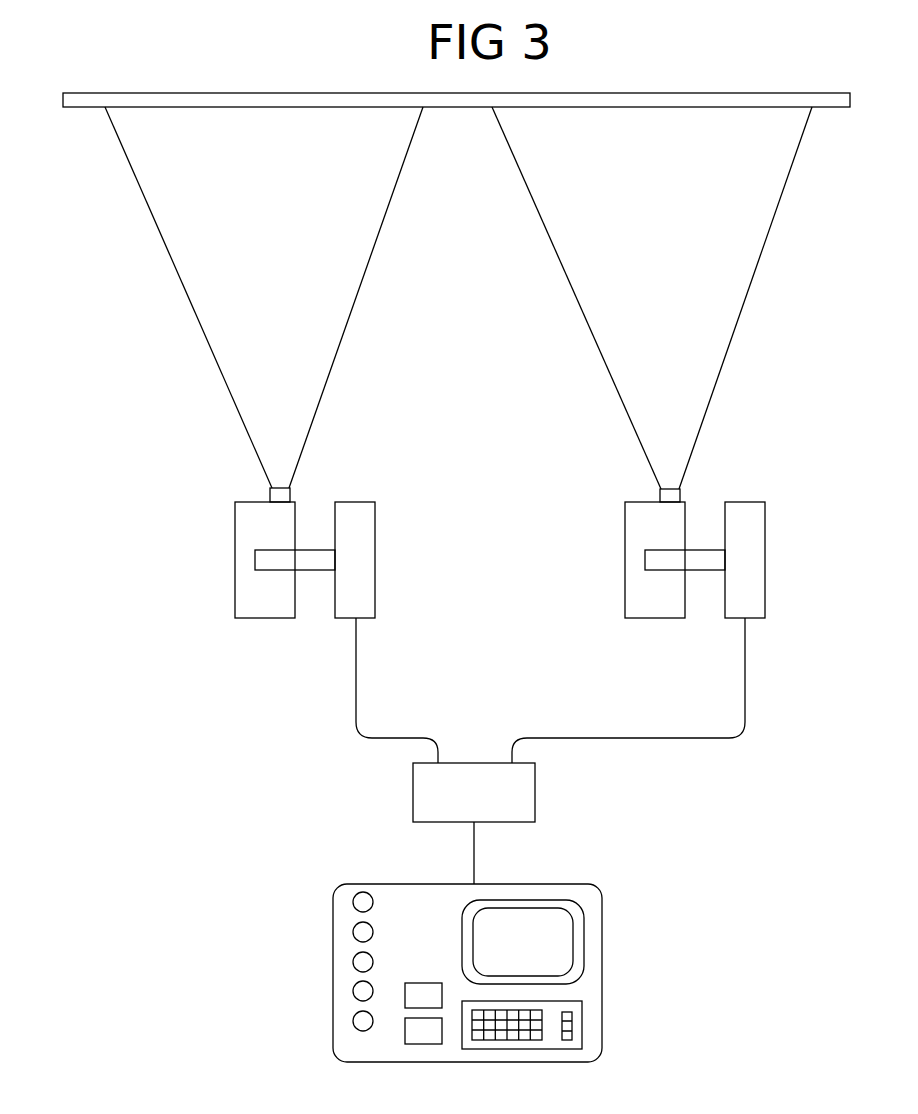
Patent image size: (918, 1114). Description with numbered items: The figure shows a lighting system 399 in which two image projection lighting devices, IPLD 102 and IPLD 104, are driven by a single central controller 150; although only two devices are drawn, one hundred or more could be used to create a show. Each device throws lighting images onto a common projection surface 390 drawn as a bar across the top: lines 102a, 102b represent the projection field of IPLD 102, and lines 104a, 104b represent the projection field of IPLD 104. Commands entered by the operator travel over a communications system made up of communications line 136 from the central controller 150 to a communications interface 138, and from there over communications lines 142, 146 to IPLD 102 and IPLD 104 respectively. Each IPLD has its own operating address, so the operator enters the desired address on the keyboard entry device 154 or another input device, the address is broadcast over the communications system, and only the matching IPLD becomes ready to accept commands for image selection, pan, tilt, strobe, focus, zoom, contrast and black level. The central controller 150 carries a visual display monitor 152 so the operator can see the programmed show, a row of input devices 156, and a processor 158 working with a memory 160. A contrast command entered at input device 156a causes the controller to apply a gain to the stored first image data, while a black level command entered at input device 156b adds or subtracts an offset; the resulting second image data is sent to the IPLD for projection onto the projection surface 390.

The lighting system 399 is at (86, 318).
The projection surface 390 is at (297, 117).
The IPLD 102 is at (225, 588).
The line 102a is at (208, 332).
The line 102b is at (357, 318).
The IPLD 104 is at (773, 593).
The line 104a is at (592, 312).
The line 104b is at (743, 305).
The communications line 142 is at (342, 682).
The communications line 146 is at (573, 740).
The communications interface 138 is at (413, 802).
The communications line 136 is at (480, 858).
The central controller 150 is at (333, 970).
The visual display monitor 152 is at (588, 938).
The keyboard entry device 154 is at (588, 1025).
The input devices 156 is at (352, 968).
The input device 156a is at (347, 993).
The input device 156b is at (347, 1025).
The processor 158 is at (423, 995).
The memory 160 is at (423, 1031).